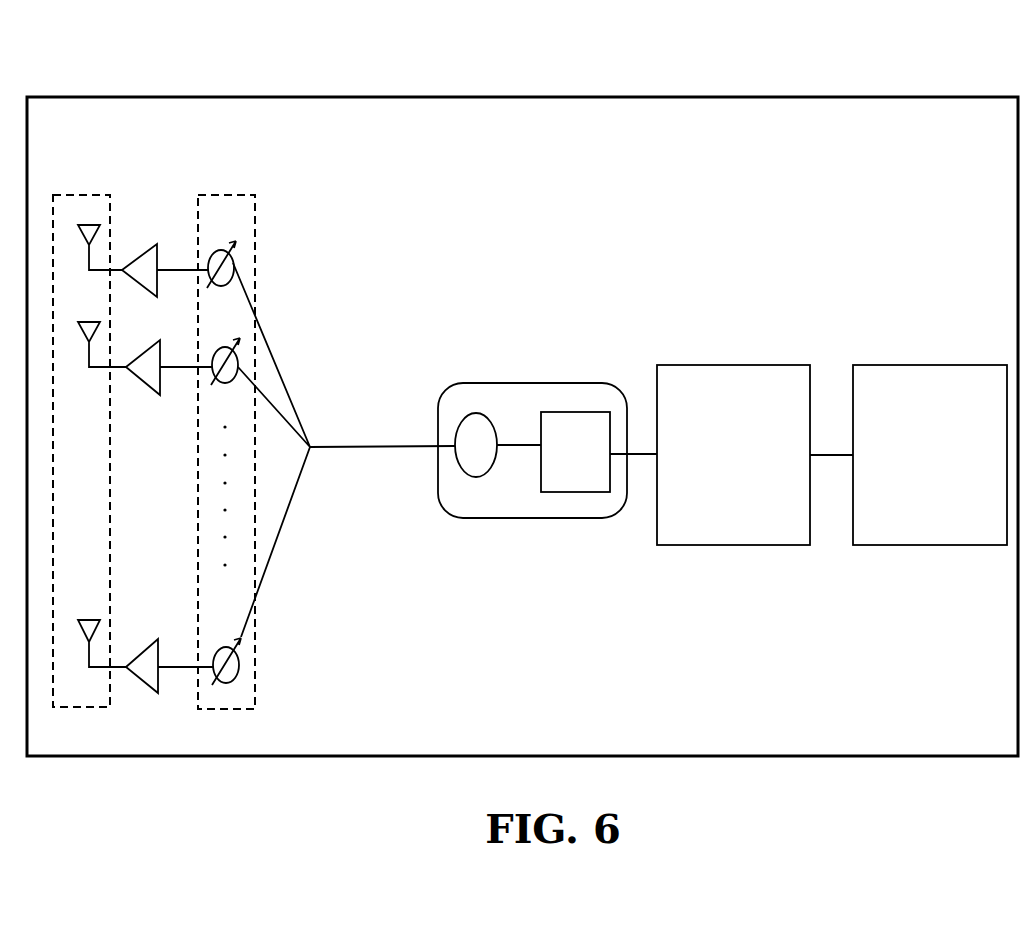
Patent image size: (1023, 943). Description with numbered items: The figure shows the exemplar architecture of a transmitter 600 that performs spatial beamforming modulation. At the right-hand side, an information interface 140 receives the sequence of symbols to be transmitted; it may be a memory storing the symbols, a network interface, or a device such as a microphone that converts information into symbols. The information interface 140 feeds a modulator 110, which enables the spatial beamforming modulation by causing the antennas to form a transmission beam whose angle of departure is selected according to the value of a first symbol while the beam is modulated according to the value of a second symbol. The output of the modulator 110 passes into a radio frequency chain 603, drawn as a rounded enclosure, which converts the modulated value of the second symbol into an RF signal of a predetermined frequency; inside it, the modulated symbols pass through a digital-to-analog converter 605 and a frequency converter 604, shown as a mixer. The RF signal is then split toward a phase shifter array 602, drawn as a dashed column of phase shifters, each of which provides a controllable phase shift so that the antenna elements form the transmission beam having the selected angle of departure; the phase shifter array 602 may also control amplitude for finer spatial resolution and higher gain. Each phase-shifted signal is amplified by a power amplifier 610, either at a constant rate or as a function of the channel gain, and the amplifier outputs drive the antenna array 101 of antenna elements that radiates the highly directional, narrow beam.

The transmitter 600 is at (562, 97).
The antenna array 101 is at (80, 195).
The power amplifier 610 is at (153, 247).
The phase shifter array 602 is at (223, 196).
The radio frequency chain 603 is at (523, 383).
The frequency converter 604 is at (463, 414).
The digital-to-analog converter 605 is at (597, 411).
The modulator 110 is at (718, 364).
The information interface 140 is at (957, 364).